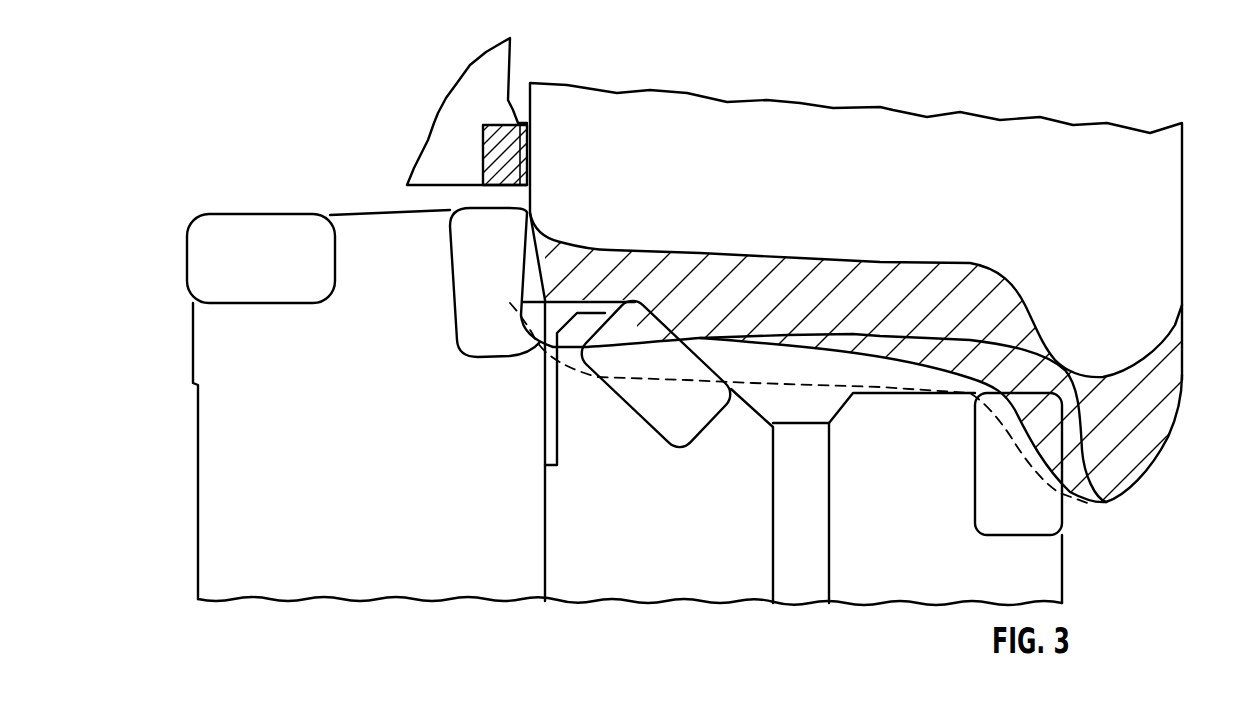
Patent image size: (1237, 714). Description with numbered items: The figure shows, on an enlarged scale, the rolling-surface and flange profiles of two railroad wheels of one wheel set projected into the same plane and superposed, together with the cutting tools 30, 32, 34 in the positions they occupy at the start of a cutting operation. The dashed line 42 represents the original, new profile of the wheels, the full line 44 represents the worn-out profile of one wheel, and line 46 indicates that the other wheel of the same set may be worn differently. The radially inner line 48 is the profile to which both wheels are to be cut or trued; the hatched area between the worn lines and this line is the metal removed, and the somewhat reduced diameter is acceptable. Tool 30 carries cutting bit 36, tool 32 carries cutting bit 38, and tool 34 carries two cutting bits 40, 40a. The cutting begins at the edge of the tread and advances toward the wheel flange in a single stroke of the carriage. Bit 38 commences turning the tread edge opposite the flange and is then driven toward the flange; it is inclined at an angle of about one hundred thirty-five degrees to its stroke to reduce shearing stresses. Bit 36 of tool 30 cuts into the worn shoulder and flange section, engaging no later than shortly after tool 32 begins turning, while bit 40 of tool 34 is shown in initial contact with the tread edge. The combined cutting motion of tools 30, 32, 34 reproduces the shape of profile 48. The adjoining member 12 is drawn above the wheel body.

The shaft / adjoining member 12 is at (471, 148).
The profile to which the surfaces are to be cut 48 is at (877, 273).
The worn out profile 44 is at (840, 354).
The differently worn profile line 46 is at (1078, 503).
The original new profile 42 is at (780, 388).
The cutting bit 38 is at (685, 416).
The cutting bit 40a is at (296, 274).
The cutting bit 40 is at (514, 274).
The cutting bit 36 is at (1015, 496).
The cutting tool 34 is at (378, 527).
The cutting tool 32 is at (683, 547).
The cutting tool 30 is at (938, 547).